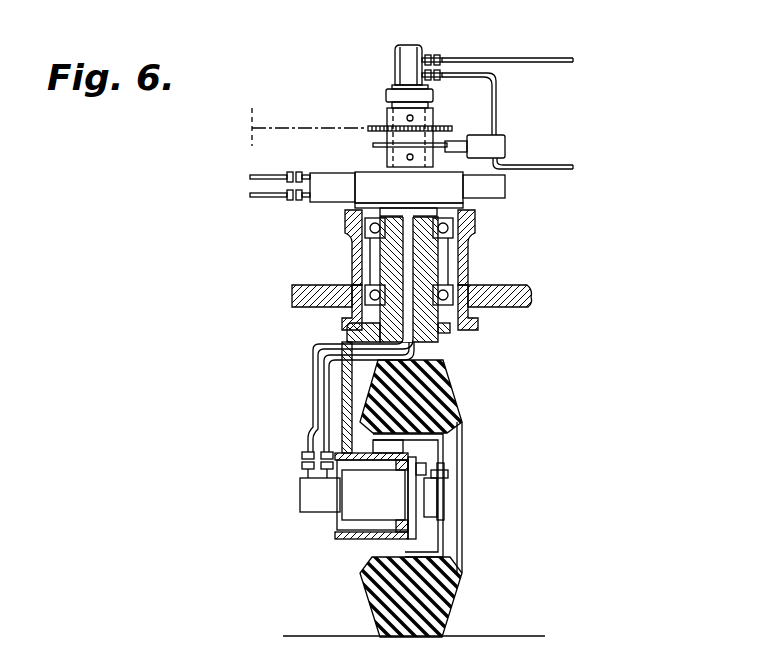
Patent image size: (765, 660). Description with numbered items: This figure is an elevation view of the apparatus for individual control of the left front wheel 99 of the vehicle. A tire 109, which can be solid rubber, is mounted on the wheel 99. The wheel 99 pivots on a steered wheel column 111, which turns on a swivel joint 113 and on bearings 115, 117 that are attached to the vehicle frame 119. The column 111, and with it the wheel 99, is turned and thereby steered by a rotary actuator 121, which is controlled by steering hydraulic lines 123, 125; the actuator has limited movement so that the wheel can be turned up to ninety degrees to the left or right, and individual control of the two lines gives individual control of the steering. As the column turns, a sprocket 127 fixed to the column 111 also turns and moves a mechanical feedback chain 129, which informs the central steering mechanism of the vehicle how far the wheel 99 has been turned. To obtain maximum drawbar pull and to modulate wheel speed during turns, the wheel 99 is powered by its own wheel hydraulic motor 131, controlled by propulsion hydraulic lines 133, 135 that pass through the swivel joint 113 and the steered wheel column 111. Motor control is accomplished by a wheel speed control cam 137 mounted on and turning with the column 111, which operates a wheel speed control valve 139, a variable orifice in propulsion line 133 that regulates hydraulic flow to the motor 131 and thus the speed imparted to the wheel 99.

The left front wheel 99 is at (450, 548).
The tire 109 is at (440, 606).
The steered wheel column 111 is at (440, 340).
The swivel joint 113 is at (397, 59).
The bearing 115 is at (368, 303).
The bearing 117 is at (368, 238).
The vehicle frame 119 is at (525, 290).
The rotary actuator 121 is at (505, 199).
The steering hydraulic line 123 is at (252, 176).
The steering hydraulic line 125 is at (252, 198).
The sprocket 127 is at (371, 126).
The mechanical feedback chain 129 is at (308, 126).
The wheel hydraulic motor 131 is at (347, 514).
The propulsion hydraulic line 133 is at (497, 110).
The propulsion hydraulic line 135 is at (553, 64).
The wheel speed control cam 137 is at (373, 145).
The wheel speed control valve 139 is at (505, 141).